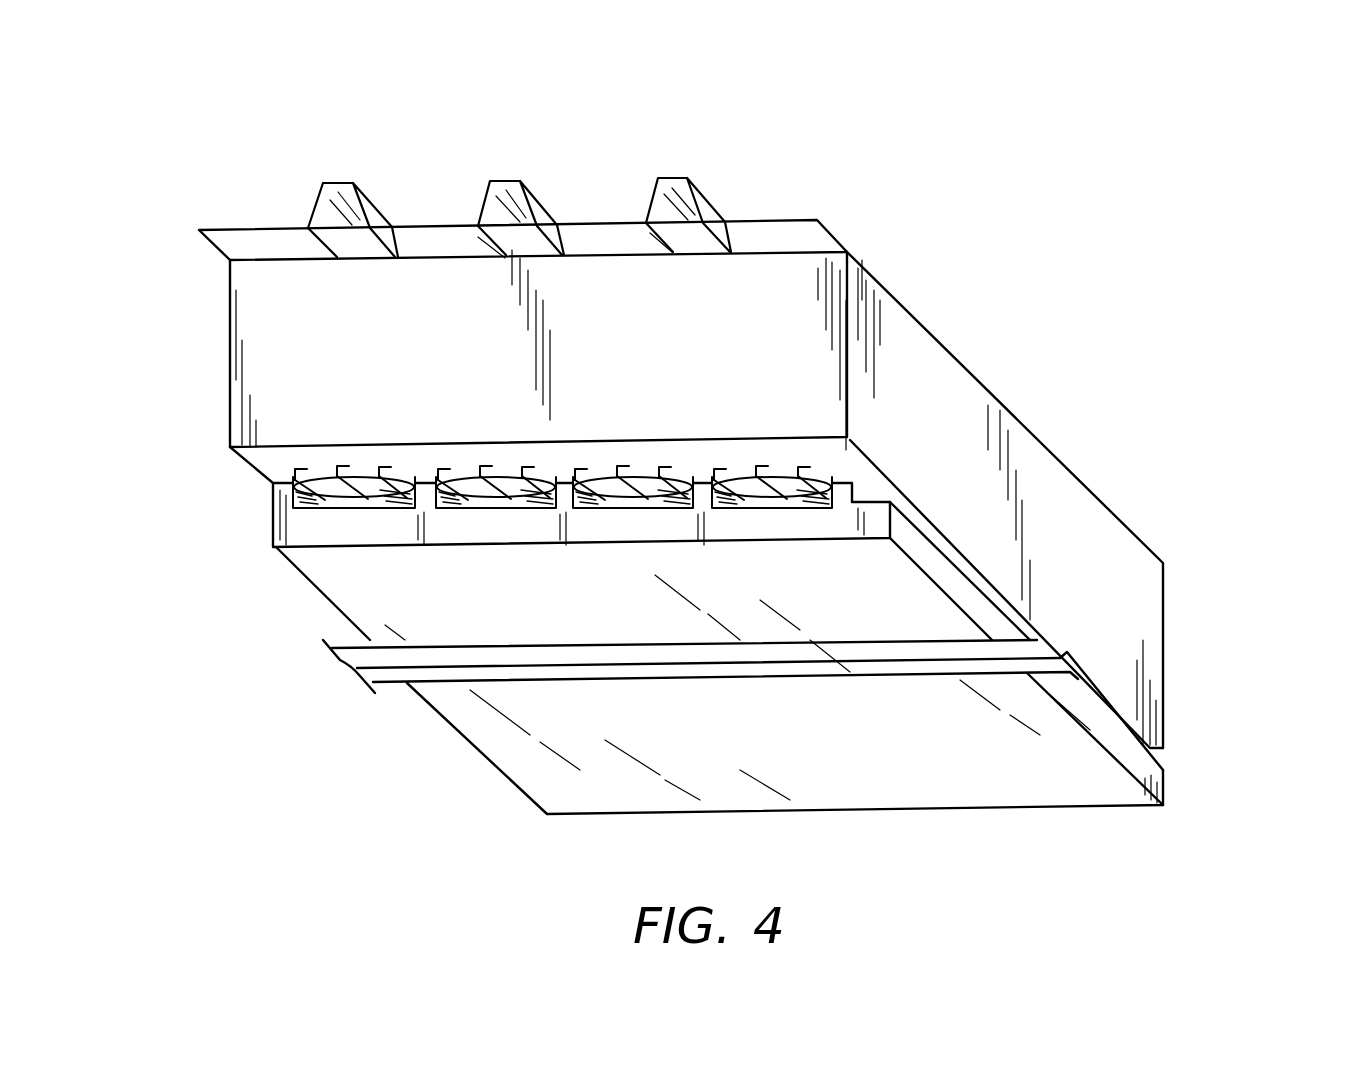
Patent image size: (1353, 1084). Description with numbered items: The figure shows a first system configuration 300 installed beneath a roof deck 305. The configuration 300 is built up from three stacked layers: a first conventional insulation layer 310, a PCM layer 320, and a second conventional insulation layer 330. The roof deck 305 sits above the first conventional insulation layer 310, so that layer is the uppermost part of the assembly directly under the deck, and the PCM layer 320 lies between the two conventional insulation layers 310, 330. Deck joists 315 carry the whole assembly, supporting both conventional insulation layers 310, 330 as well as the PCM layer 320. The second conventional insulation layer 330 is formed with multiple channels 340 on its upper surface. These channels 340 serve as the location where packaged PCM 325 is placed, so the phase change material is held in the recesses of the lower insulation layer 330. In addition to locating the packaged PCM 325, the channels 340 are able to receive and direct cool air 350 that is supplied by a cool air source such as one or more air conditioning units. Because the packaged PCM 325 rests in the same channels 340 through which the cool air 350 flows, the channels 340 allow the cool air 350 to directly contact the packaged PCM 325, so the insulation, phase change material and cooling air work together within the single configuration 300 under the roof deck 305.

The first system configuration 300 is at (928, 186).
The roof deck 305 is at (712, 205).
The first conventional insulation layer 310 is at (1063, 533).
The deck joists 315 is at (460, 663).
The PCM layer 320 is at (287, 483).
The packaged PCM 325 is at (437, 502).
The second conventional insulation layer 330 is at (1117, 740).
The channels 340 is at (290, 503).
The cool air 350 is at (826, 463).